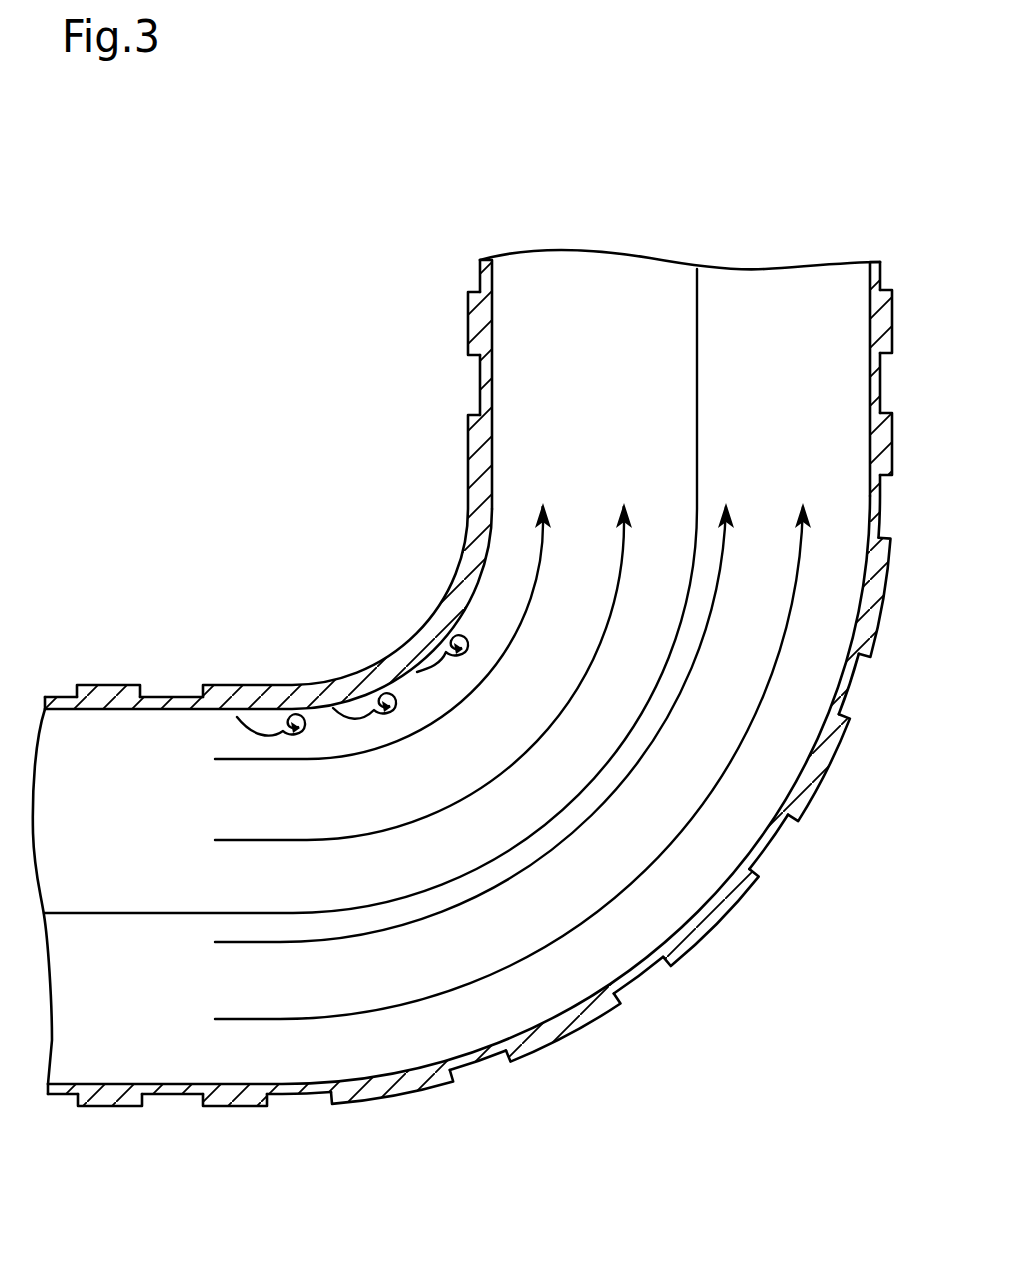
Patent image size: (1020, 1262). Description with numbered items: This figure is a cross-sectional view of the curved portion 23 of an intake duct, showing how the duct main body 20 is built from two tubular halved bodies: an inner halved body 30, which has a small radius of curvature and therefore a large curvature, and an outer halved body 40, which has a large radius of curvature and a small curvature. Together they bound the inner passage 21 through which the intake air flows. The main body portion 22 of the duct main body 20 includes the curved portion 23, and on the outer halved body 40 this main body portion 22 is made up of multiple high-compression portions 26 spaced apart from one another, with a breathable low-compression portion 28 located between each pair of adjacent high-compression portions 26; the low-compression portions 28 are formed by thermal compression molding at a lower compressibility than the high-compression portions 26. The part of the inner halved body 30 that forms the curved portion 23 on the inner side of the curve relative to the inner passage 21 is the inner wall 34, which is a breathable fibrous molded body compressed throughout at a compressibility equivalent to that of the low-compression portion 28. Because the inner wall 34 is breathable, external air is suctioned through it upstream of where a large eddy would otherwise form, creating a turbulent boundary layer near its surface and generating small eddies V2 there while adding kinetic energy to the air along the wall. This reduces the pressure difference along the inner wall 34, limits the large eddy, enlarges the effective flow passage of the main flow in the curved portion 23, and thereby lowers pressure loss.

The duct main body 20 is at (461, 713).
The inner passage 21 is at (122, 894).
The main body portion 22 is at (466, 323).
The curved portion 23 is at (408, 1096).
The high-compression portion 26 is at (174, 697).
The low-compression portion 28 is at (118, 685).
The inner halved body 30 is at (51, 695).
The inner wall 34 is at (366, 672).
The outer halved body 40 is at (63, 1096).
The eddies V2 is at (368, 679).